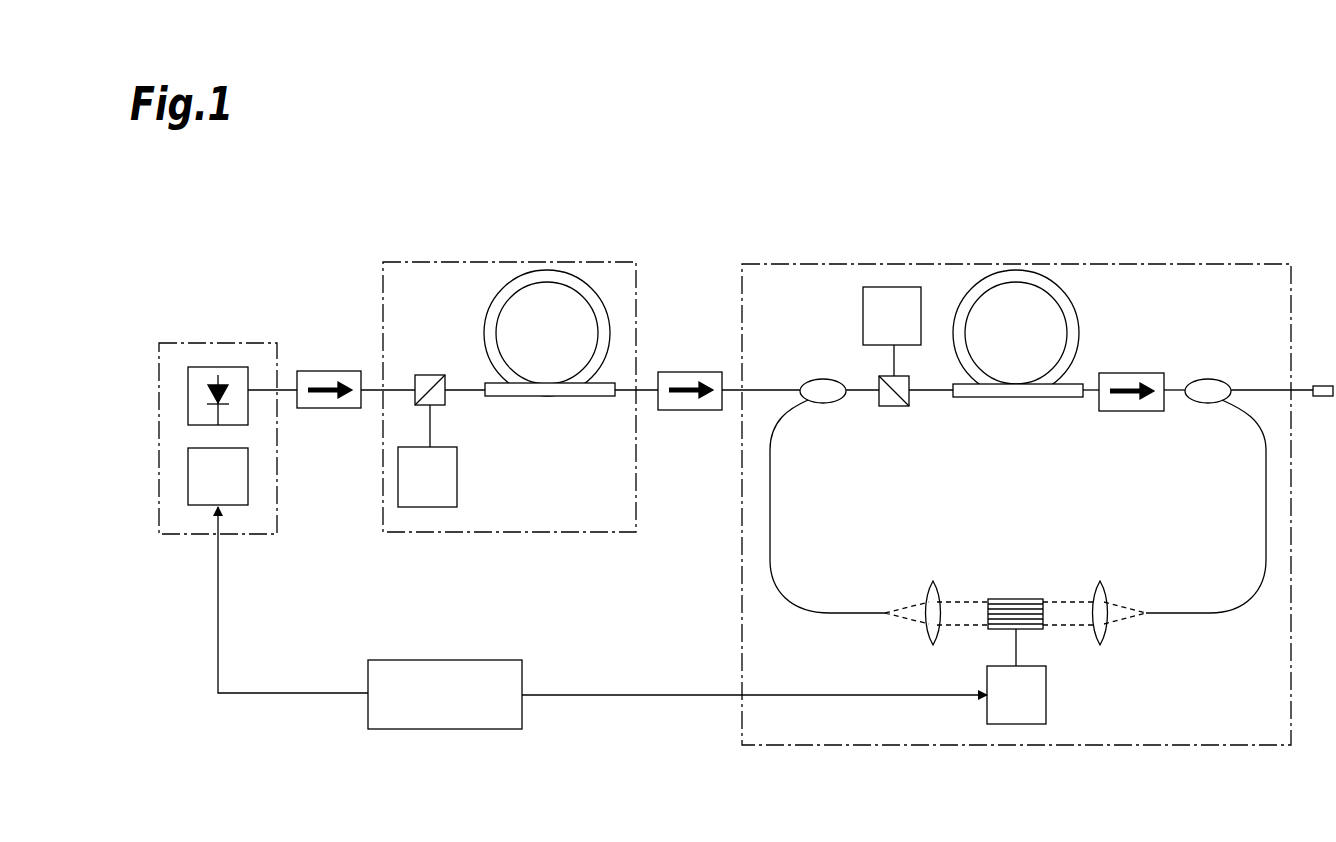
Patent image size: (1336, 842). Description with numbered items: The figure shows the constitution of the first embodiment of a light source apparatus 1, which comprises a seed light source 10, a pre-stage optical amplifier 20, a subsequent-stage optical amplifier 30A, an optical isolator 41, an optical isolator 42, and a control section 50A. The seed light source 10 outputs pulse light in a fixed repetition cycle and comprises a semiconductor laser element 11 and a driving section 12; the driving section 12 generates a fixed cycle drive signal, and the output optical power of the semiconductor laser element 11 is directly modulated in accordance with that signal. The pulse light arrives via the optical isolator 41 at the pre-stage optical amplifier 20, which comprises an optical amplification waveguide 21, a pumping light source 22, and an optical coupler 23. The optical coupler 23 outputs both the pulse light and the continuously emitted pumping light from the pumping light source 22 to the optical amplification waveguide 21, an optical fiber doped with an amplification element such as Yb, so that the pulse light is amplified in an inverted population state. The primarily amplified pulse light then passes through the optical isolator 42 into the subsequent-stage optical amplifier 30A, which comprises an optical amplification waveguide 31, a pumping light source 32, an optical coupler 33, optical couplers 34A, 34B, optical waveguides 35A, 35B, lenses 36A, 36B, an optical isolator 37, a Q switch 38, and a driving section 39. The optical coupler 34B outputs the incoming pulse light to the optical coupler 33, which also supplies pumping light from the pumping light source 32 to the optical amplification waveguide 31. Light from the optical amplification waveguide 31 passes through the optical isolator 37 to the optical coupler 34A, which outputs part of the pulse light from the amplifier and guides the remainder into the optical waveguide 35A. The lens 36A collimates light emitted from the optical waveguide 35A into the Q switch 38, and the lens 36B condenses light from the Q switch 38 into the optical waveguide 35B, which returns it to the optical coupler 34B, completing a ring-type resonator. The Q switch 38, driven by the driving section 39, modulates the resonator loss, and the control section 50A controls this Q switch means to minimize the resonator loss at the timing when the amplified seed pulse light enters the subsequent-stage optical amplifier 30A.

The light source apparatus 1 is at (1072, 193).
The seed light source 10 is at (186, 343).
The semiconductor laser element 11 is at (188, 400).
The driving section 12 is at (188, 481).
The optical isolator 41 is at (320, 409).
The pre-stage optical amplifier 20 is at (493, 262).
The optical amplification waveguide 21 is at (497, 295).
The pumping light source 22 is at (457, 483).
The optical coupler 23 is at (430, 375).
The optical isolator 42 is at (682, 410).
The subsequent-stage optical amplifier 30A is at (1192, 264).
The optical amplification waveguide 31 is at (1066, 292).
The pumping light source 32 is at (863, 318).
The optical coupler 33 is at (888, 407).
The optical coupler 34A is at (1211, 380).
The optical coupler 34B is at (827, 380).
The optical waveguide 35A is at (1266, 515).
The optical waveguide 35B is at (770, 505).
The lens 36A is at (1105, 632).
The lens 36B is at (926, 632).
The optical isolator 37 is at (1124, 412).
The Q switch 38 is at (1016, 599).
The driving section 39 is at (1046, 705).
The control section 50A is at (438, 729).